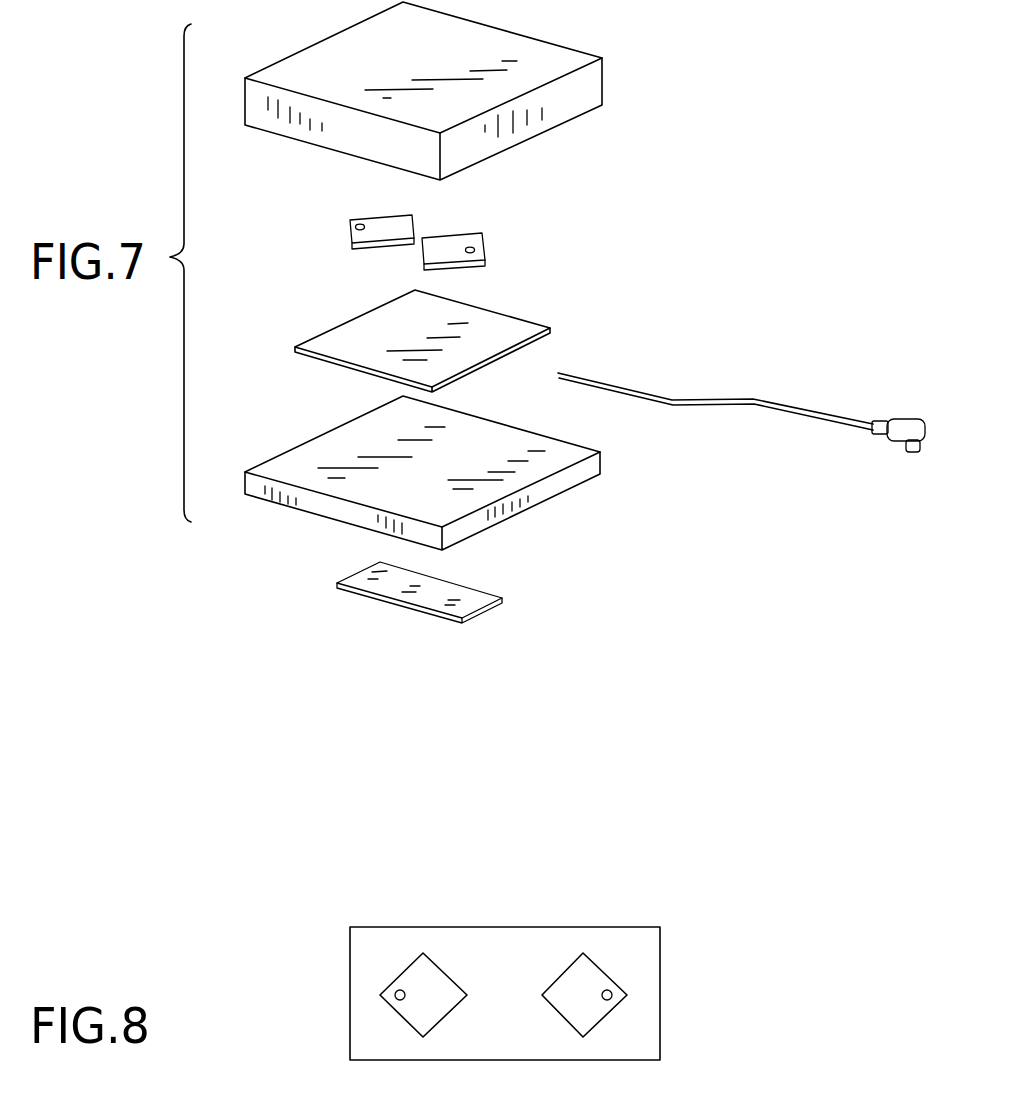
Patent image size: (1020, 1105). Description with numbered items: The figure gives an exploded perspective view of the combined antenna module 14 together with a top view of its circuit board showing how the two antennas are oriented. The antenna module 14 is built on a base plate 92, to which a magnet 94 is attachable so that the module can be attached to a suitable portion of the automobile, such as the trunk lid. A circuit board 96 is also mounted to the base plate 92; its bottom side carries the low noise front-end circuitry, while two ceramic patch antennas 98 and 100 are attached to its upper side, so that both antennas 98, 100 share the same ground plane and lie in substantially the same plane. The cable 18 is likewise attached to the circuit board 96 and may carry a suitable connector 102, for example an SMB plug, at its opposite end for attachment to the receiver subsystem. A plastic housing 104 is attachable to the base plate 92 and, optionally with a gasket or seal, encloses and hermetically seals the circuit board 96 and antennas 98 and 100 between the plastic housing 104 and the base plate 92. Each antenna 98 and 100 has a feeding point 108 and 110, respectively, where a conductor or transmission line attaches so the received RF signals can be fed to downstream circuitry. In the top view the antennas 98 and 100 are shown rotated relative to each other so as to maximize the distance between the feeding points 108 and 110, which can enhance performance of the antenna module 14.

In FIG. 7, the combined antenna module 14 is at (236, 598).
In FIG. 7, the cable 18 is at (732, 400).
In FIG. 7, the base plate 92 is at (538, 470).
In FIG. 7, the magnet 94 is at (466, 597).
In FIG. 7, the circuit board 96 is at (525, 322).
In FIG. 8, the circuit board 96 is at (548, 940).
In FIG. 7, the ceramic patch antenna 98 is at (405, 225).
In FIG. 8, the ceramic patch antenna 98 is at (428, 970).
In FIG. 7, the ceramic patch antenna 100 is at (480, 240).
In FIG. 8, the ceramic patch antenna 100 is at (595, 973).
In FIG. 7, the connector 102 is at (884, 455).
In FIG. 7, the plastic housing 104 is at (568, 57).
In FIG. 7, the feeding point 108 is at (358, 223).
In FIG. 8, the feeding point 108 is at (390, 988).
In FIG. 7, the feeding point 110 is at (472, 252).
In FIG. 8, the feeding point 110 is at (620, 993).